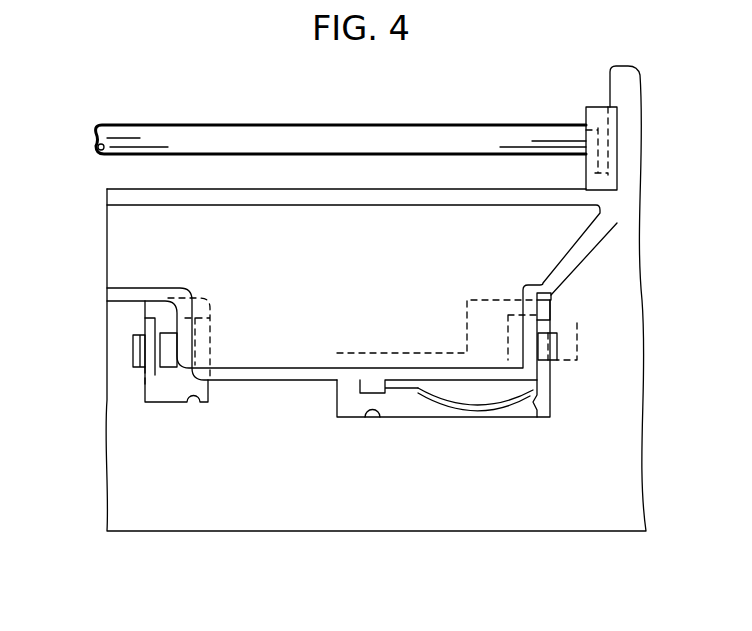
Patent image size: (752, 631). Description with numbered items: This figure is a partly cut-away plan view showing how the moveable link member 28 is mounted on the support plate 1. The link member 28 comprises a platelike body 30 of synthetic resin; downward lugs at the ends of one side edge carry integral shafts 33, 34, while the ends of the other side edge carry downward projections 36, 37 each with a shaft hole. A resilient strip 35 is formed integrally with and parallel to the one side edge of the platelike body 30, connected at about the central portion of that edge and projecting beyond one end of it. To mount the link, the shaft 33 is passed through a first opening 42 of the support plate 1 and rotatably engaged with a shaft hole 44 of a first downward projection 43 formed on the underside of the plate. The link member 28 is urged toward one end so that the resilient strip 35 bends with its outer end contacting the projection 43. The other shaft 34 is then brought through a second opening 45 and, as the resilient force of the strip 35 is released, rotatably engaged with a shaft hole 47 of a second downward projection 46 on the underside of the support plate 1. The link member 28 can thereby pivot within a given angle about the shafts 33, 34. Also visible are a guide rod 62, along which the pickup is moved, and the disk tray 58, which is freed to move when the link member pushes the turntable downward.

The support plate 1 is at (267, 508).
The moveable link member 28 is at (277, 189).
The platelike body 30 is at (360, 203).
The shaft 33 is at (568, 360).
The shaft 34 is at (168, 367).
The resilient strip 35 is at (423, 418).
The downward projection 36 is at (597, 107).
The downward projection 37 is at (586, 130).
The first opening 42 is at (365, 407).
The first downward projection 43 is at (537, 414).
The shaft hole 44 is at (557, 323).
The second opening 45 is at (202, 400).
The second downward projection 46 is at (145, 392).
The shaft hole 47 is at (145, 329).
The disk tray 58 is at (490, 112).
The guide rod 62 is at (393, 118).